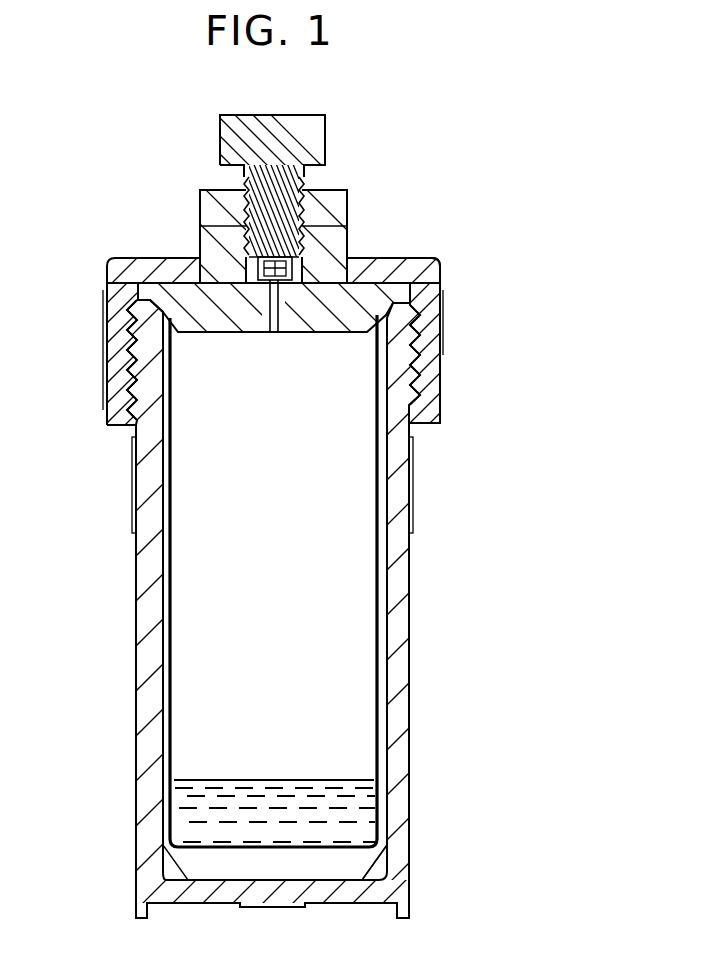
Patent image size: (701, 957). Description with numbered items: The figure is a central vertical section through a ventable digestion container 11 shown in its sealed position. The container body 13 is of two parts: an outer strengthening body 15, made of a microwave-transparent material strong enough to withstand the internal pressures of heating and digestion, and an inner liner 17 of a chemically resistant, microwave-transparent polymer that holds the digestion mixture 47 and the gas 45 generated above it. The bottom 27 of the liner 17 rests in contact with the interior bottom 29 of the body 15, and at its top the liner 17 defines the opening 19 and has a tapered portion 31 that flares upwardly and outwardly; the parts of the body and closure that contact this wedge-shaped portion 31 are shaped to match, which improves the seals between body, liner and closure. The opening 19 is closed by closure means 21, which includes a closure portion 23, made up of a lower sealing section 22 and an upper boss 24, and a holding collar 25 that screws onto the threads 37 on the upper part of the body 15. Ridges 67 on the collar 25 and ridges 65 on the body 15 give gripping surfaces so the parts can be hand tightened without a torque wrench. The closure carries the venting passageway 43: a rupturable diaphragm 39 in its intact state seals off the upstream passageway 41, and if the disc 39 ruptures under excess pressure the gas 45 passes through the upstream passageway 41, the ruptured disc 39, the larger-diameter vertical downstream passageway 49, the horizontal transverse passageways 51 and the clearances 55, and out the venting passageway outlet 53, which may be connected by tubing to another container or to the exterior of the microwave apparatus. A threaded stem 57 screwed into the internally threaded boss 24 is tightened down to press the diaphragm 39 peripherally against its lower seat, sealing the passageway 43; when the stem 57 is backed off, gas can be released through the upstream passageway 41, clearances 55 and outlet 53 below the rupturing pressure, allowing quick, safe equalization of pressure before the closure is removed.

The ventable digestion container 11 is at (436, 592).
The container body 13 is at (414, 722).
The body 15 is at (410, 805).
The liner 17 is at (175, 708).
The opening 19 is at (281, 343).
The closure means 21 is at (358, 248).
The sealing section 22 is at (202, 335).
The closure portion 23 is at (358, 197).
The boss 24 is at (350, 222).
The holding collar 25 is at (442, 272).
The bottom of liner 27 is at (230, 882).
The interior bottom 29 is at (365, 880).
The tapered portion 31 is at (165, 307).
The threads 37 is at (420, 330).
The rupturable diaphragm 39 is at (258, 267).
The upstream passageway 41 is at (282, 336).
The venting passageway 43 is at (292, 318).
The gas 45 is at (190, 642).
The digestion mixture 47 is at (197, 810).
The downstream passageway 49 is at (302, 255).
The transverse passageways 51 is at (244, 181).
The venting passageway outlet 53 is at (207, 233).
The clearances 55 is at (430, 262).
The threaded stem 57 is at (265, 113).
The ridges 65 is at (414, 492).
The ridges 67 is at (107, 325).